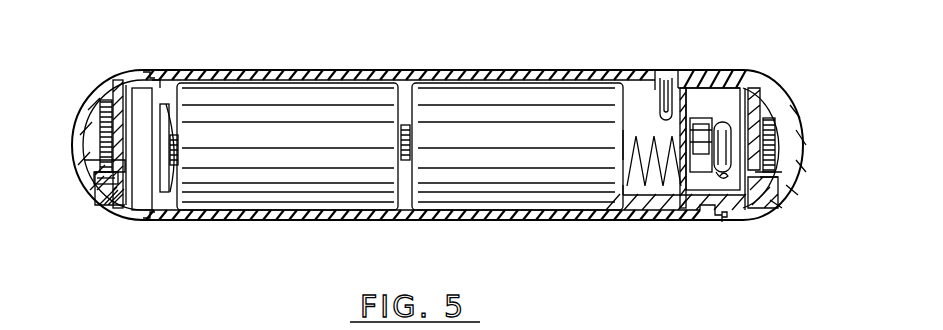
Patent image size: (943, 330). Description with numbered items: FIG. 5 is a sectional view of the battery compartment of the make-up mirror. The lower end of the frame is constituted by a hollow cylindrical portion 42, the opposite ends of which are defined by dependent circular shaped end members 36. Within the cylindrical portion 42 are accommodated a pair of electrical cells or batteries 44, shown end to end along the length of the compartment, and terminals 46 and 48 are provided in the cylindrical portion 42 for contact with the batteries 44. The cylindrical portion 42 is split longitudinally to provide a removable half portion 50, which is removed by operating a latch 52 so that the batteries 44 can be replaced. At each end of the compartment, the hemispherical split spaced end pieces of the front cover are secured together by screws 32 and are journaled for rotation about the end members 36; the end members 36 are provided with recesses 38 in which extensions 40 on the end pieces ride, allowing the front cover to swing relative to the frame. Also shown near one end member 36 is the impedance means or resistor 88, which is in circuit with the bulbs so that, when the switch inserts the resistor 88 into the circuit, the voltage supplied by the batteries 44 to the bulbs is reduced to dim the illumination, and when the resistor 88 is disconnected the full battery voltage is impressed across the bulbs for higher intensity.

The screws 32 is at (103, 133).
The end members 36 is at (692, 80).
The recesses 38 is at (152, 78).
The extensions 40 is at (138, 216).
The hollow cylindrical portion 42 is at (338, 70).
The batteries 44 is at (433, 195).
The terminal 46 is at (173, 213).
The terminal 48 is at (665, 182).
The removable half portion 50 is at (486, 70).
The latch 52 is at (653, 98).
The resistor 88 is at (727, 127).